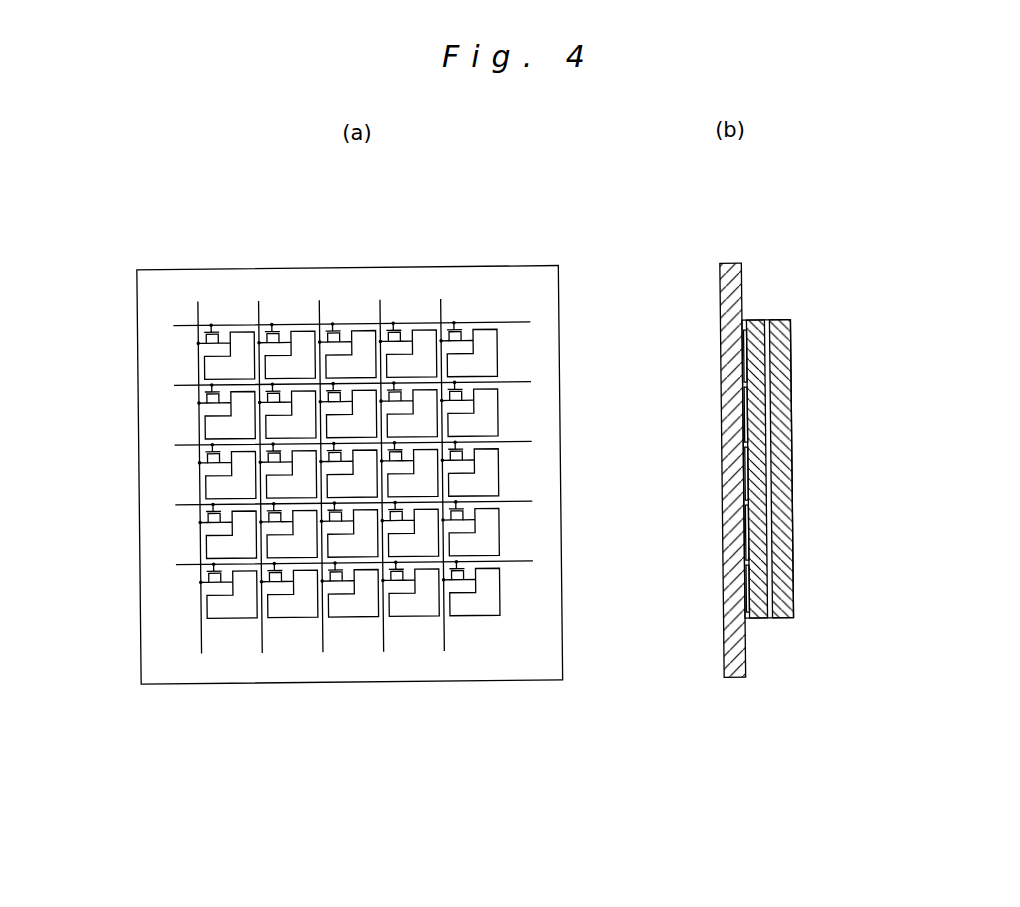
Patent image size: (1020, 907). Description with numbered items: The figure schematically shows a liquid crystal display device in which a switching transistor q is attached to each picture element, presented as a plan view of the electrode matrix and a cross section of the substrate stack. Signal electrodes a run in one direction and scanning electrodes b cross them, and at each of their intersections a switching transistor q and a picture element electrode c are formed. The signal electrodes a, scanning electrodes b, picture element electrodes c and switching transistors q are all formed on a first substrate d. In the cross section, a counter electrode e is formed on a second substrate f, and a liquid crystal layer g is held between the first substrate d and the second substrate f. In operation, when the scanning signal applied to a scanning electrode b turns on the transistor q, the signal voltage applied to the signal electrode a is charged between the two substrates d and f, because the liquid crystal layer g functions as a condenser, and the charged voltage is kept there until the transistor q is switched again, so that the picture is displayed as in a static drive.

The signal electrode a is at (198, 300).
The scanning electrode b is at (175, 326).
The picture element electrode c is at (485, 360).
The first substrate d is at (348, 668).
The counter electrode e is at (766, 323).
The second substrate f is at (790, 327).
The liquid crystal layer g is at (760, 608).
The switching transistor q is at (452, 327).